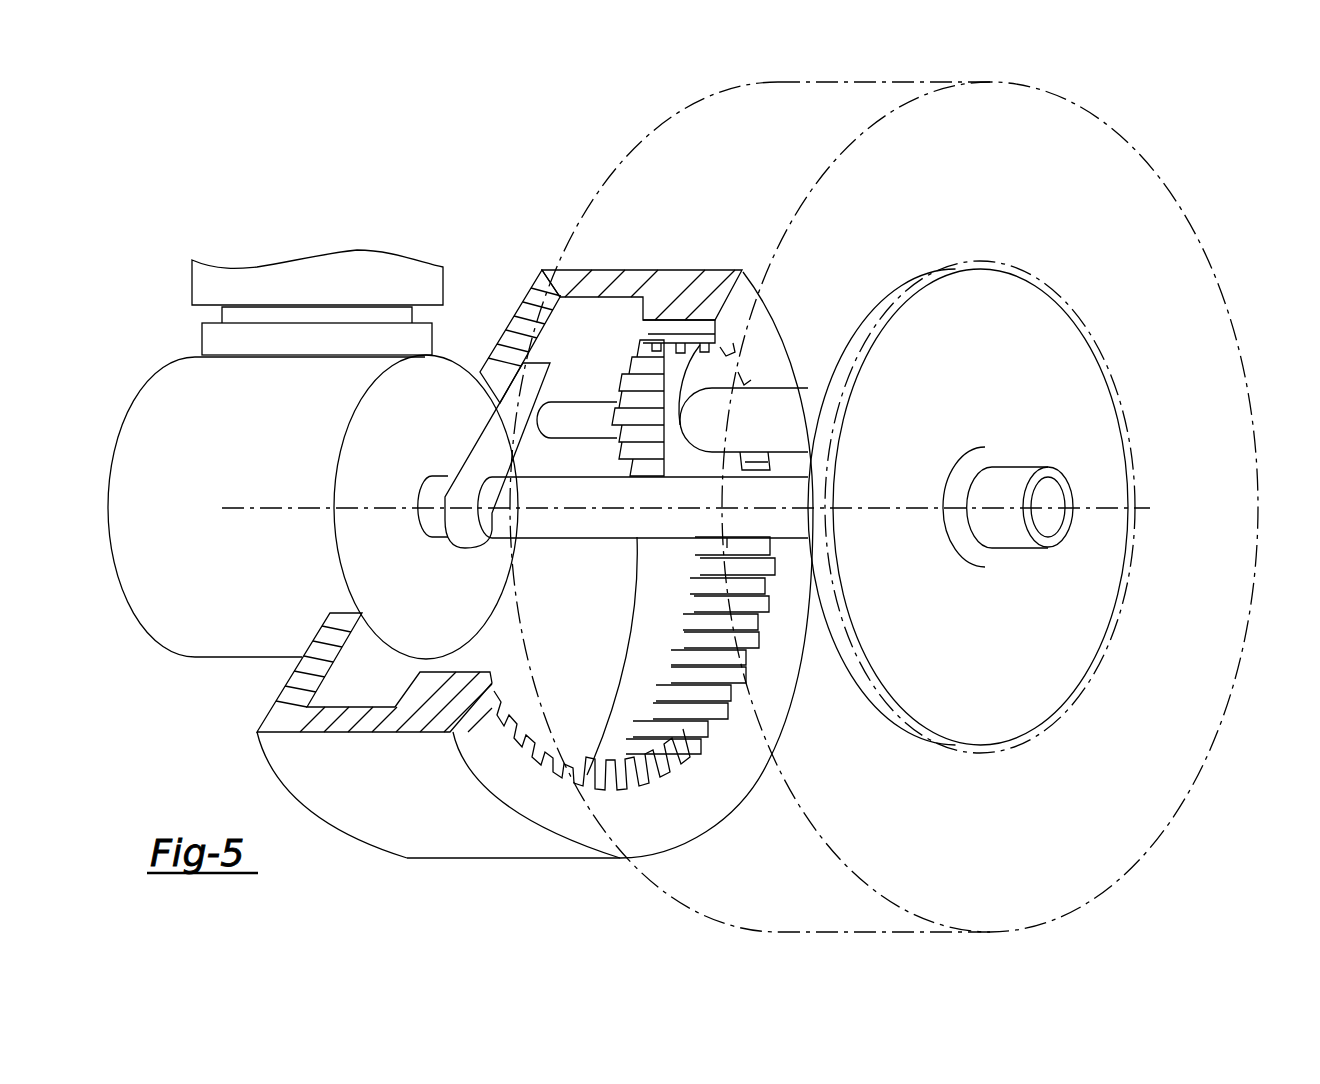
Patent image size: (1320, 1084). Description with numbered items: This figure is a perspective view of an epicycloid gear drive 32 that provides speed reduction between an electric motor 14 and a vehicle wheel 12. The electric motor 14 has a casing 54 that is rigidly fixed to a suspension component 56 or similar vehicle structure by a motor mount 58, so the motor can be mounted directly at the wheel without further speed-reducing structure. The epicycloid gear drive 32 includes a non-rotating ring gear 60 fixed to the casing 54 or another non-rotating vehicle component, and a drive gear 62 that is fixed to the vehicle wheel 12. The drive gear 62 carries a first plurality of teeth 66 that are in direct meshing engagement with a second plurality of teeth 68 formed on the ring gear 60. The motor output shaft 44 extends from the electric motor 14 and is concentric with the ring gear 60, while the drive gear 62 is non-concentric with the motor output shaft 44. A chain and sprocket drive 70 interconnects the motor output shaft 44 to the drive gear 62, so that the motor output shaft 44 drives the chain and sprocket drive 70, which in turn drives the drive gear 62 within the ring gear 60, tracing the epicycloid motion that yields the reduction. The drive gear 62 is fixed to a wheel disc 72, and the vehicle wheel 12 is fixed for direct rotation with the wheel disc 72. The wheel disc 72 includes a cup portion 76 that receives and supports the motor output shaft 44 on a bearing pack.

The vehicle wheel 12 is at (1238, 350).
The electric motor 14 is at (254, 563).
The epicycloid gear drive 32 is at (505, 252).
The motor output shaft 44 is at (569, 527).
The casing 54 is at (150, 612).
The suspension component 56 is at (282, 277).
The motor mount 58 is at (238, 340).
The ring gear 60 is at (305, 777).
The drive gear 62 is at (652, 343).
The first plurality of teeth 66 is at (700, 733).
The second plurality of teeth 68 is at (455, 675).
The chain and sprocket drive 70 is at (497, 425).
The wheel disc 72 is at (1073, 650).
The cup portion 76 is at (1007, 530).